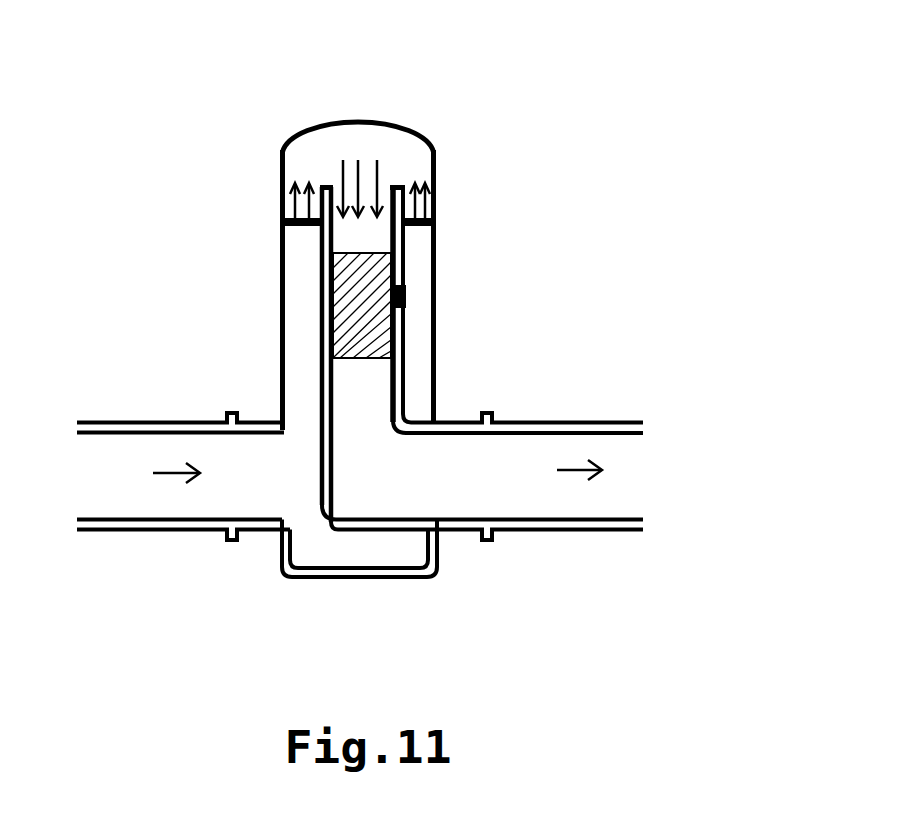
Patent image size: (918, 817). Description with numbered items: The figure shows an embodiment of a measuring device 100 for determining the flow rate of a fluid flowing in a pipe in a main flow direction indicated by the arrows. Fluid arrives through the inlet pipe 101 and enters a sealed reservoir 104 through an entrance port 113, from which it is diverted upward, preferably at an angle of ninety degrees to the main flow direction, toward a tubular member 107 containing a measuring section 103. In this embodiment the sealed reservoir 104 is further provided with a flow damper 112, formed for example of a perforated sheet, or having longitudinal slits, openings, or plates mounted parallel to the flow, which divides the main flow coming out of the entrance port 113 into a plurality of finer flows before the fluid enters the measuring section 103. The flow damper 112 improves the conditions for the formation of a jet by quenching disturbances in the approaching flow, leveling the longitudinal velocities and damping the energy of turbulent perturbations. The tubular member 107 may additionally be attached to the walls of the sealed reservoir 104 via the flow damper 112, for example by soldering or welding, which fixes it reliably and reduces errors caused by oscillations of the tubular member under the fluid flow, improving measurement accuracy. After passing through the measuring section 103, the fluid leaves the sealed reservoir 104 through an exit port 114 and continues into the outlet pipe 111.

The measuring device 100 is at (508, 216).
The inlet pipe 101 is at (135, 532).
The measuring section 103 is at (372, 337).
The sealed reservoir 104 is at (372, 120).
The tubular member 107 is at (407, 231).
The outlet pipe 111 is at (573, 533).
The flow damper 112 is at (281, 217).
The entrance port 113 is at (243, 478).
The exit port 114 is at (433, 473).